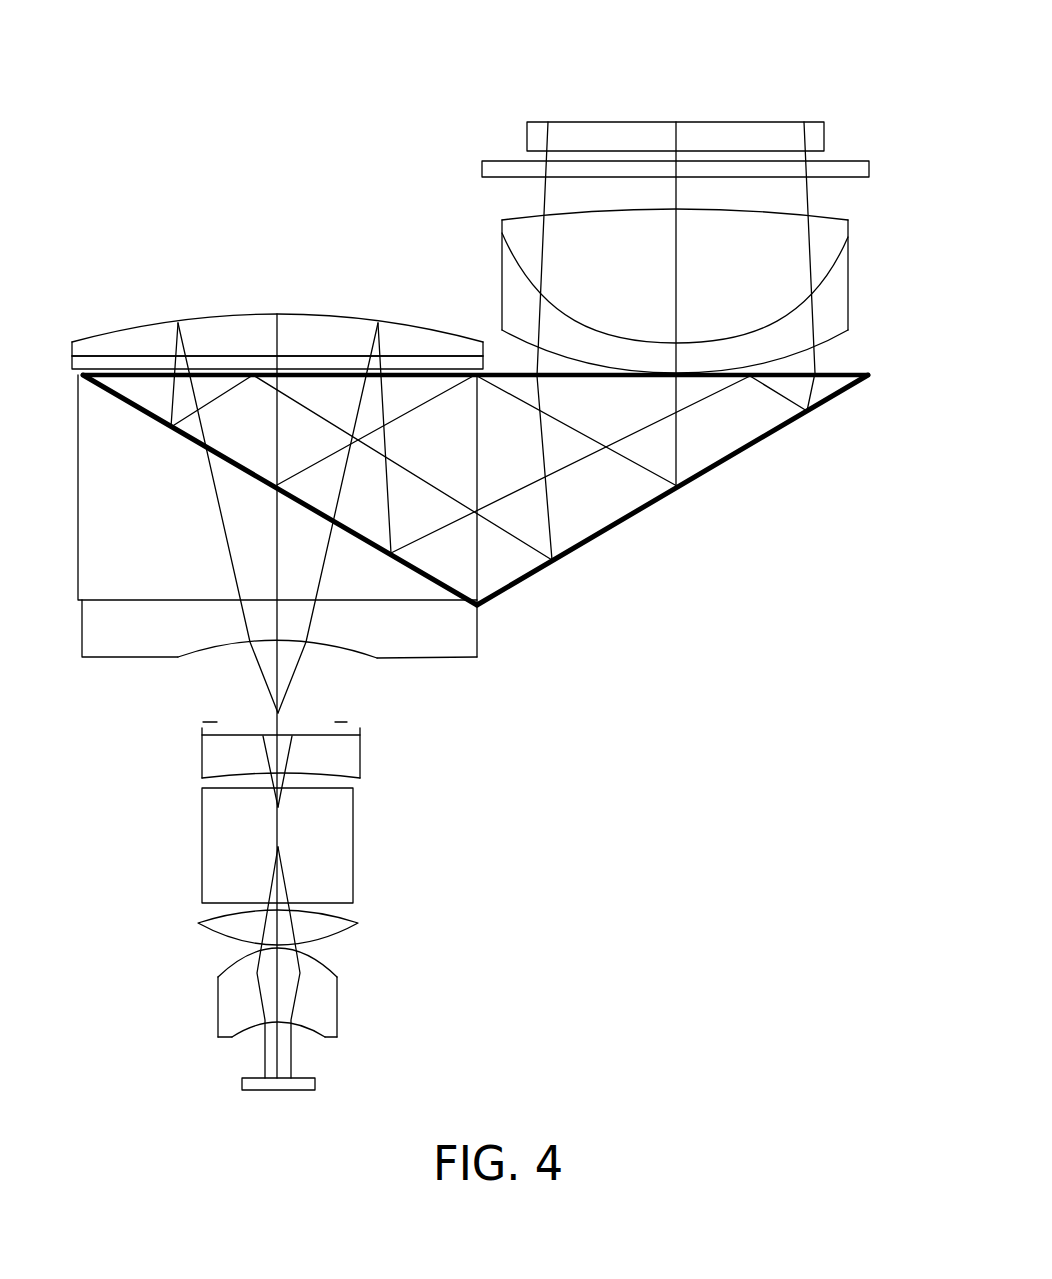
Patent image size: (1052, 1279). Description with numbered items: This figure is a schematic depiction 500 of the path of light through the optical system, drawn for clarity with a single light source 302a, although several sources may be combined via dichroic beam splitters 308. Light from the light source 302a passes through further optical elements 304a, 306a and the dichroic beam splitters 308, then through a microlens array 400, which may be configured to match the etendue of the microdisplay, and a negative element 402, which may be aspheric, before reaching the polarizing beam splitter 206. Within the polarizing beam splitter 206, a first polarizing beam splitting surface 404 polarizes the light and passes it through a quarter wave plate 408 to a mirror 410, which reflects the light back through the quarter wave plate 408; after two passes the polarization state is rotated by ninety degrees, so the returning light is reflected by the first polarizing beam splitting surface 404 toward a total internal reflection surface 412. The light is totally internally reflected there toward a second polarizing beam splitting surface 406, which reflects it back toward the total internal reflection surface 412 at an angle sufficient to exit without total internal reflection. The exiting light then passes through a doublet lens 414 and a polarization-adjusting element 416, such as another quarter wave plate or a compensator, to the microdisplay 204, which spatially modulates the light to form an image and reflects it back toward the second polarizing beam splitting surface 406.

The optical system 500 is at (146, 38).
The microdisplay 204 is at (527, 122).
The polarization-adjusting element 416 is at (482, 161).
The doublet lens 414 is at (852, 254).
The total internal reflection surface 412 is at (847, 373).
The mirror 410 is at (72, 342).
The quarter wave plate 408 is at (75, 370).
The first polarizing beam splitting surface 404 is at (137, 412).
The polarizing beam splitter 206 is at (190, 444).
The second polarizing beam splitting surface 406 is at (742, 453).
The negative element 402 is at (477, 657).
The microlens array 400 is at (360, 754).
The dichroic beam splitters 308 is at (353, 838).
The lens 306a is at (357, 923).
The collimating lens 304a is at (335, 977).
The first light source 302a is at (230, 1087).